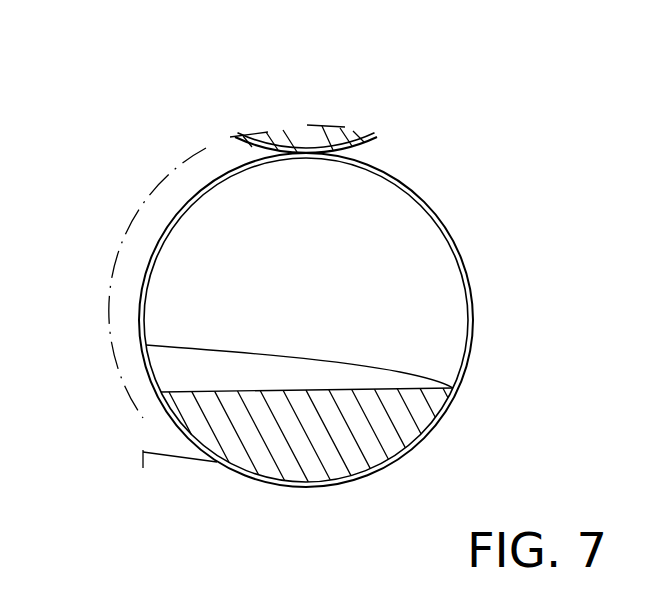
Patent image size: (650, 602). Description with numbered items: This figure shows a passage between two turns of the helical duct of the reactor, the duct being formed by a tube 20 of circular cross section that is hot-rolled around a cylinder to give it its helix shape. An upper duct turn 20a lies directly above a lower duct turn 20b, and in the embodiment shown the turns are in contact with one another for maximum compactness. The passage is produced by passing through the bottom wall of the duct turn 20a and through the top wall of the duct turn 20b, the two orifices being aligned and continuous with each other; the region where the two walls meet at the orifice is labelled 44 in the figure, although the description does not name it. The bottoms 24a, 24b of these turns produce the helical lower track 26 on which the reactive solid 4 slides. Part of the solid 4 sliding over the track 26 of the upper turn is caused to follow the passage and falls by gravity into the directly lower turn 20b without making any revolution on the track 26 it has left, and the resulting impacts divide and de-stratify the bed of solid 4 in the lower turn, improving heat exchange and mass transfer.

The tube 20 is at (430, 191).
The duct turn 20a is at (374, 119).
The lower duct turn 20b is at (461, 243).
The helix turn bottom 24a is at (238, 137).
The helix turn bottom 24b is at (213, 453).
The contact point 44 is at (307, 152).
The reactive solid 4 is at (326, 125).
The helical lower track 26 is at (287, 485).